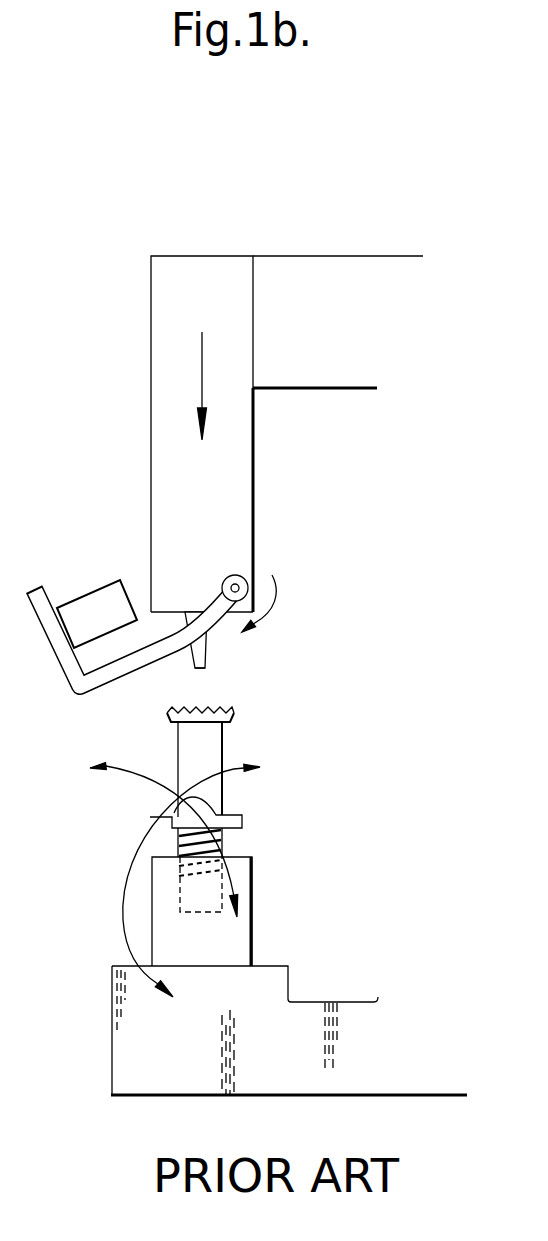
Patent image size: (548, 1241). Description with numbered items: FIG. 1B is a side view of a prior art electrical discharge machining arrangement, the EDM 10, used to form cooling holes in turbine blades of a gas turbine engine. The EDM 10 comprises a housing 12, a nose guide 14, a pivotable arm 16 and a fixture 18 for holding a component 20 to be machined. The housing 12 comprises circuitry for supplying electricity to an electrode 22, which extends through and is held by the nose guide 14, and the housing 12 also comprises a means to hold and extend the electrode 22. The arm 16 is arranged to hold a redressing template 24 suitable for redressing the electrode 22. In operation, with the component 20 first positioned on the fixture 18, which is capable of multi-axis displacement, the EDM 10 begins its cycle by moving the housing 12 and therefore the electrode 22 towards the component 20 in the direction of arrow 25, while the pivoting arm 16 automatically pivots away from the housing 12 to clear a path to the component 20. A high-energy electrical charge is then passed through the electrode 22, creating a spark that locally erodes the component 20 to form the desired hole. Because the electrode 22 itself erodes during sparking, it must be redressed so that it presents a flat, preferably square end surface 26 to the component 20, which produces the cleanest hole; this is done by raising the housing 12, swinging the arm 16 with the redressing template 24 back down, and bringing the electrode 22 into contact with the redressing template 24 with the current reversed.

The EDM 10 is at (192, 200).
The housing 12 is at (229, 268).
The nose guide 14 is at (207, 656).
The pivotable arm 16 is at (33, 590).
The fixture 18 is at (102, 913).
The component 20 is at (192, 743).
The electrode 22 is at (212, 638).
The redressing template 24 is at (96, 600).
The arrow 25 is at (203, 378).
The end surface 26 is at (200, 674).